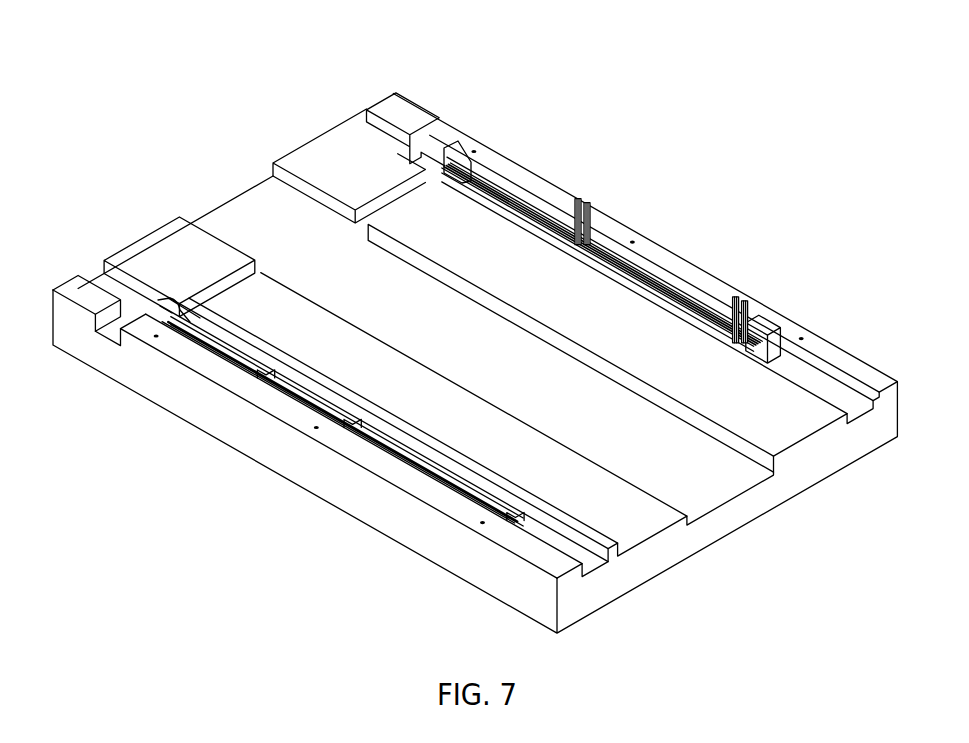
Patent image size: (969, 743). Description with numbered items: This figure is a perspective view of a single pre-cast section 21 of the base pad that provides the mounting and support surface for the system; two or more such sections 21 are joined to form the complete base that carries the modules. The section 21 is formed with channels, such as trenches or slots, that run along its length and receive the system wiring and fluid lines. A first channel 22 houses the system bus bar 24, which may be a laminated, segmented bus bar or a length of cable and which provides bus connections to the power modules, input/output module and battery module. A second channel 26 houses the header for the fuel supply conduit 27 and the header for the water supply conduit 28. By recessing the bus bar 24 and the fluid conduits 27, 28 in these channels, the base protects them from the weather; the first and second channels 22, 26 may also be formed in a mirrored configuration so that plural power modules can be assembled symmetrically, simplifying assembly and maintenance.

The section 21 is at (656, 195).
The first channel 22 is at (820, 388).
The system bus bar 24 is at (695, 316).
The second channel 26 is at (562, 547).
The fuel supply conduit 27 is at (468, 512).
The water supply conduit 28 is at (188, 325).